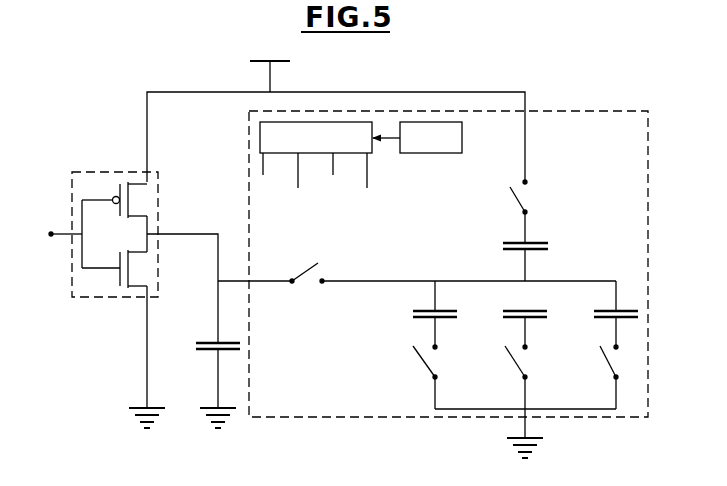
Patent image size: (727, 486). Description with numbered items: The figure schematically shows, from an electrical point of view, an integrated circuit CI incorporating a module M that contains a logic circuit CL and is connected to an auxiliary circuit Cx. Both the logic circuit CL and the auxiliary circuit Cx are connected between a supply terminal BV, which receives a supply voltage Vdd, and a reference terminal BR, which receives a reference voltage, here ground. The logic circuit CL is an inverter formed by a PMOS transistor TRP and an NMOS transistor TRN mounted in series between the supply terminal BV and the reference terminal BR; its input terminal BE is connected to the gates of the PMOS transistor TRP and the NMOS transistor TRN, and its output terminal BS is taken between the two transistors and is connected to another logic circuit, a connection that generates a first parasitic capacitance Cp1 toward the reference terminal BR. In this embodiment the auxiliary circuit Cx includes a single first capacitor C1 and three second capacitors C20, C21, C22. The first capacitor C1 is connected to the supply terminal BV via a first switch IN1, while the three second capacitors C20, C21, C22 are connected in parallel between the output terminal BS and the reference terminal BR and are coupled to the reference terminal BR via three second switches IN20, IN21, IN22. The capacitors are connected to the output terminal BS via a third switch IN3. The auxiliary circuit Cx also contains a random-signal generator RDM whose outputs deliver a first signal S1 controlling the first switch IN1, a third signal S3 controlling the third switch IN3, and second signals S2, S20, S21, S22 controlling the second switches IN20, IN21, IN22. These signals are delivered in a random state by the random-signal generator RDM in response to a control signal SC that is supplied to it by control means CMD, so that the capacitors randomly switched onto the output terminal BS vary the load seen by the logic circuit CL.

The supply voltage Vdd is at (270, 67).
The supply terminal BV is at (264, 88).
The logic circuit CL is at (106, 172).
The PMOS transistor TRP is at (151, 200).
The NMOS transistor TRN is at (151, 268).
The input terminal BE is at (52, 230).
The output terminal BS is at (219, 233).
The first parasitic capacitance Cp1 is at (208, 340).
The reference terminal BR is at (127, 409).
The module M is at (80, 352).
The integrated circuit CI is at (70, 427).
The auxiliary circuit Cx is at (560, 111).
The random-signal generator RDM is at (316, 155).
The control means CMD is at (431, 137).
The control signal SC is at (386, 141).
The second signal S2 is at (264, 186).
The second signal for switch IN20 S20 is at (410, 366).
The second signal for switch IN21 S21 is at (502, 366).
The second signal for switch IN22 S22 is at (597, 366).
The first signal S1 is at (505, 199).
The first switch IN1 is at (511, 178).
The first capacitor C1 is at (500, 244).
The third signal S3 is at (305, 261).
The third switch IN3 is at (311, 285).
The second capacitor C20 is at (425, 310).
The second capacitor C21 is at (515, 310).
The second capacitor C22 is at (606, 310).
The second switch IN20 is at (410, 346).
The second switch IN21 is at (505, 346).
The second switch IN22 is at (600, 347).